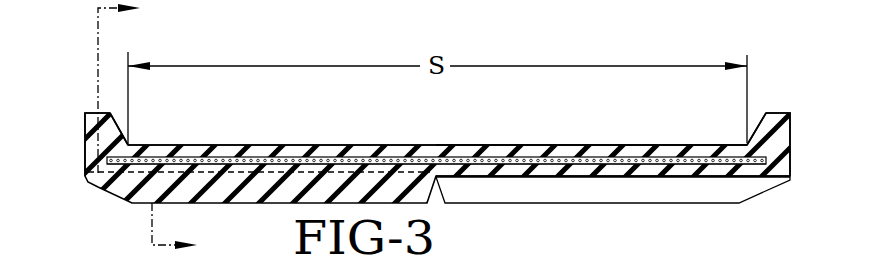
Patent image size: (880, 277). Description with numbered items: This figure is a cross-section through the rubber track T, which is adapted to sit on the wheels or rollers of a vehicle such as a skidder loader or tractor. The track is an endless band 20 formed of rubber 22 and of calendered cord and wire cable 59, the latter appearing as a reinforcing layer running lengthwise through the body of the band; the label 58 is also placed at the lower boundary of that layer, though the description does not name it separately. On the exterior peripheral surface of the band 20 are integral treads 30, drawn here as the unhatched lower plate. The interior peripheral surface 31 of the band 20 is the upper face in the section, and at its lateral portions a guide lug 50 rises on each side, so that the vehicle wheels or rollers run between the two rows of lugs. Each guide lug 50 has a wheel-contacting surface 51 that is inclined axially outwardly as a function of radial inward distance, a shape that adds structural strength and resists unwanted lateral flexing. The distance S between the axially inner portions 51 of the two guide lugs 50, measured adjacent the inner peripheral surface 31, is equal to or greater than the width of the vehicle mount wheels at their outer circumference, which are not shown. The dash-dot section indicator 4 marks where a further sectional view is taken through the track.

The section line 4- 4 is at (157, 132).
The endless band 20 is at (439, 152).
The rubber 22 is at (601, 145).
The treads 30 is at (603, 193).
The interior peripheral surface 31 is at (287, 145).
The guide lugs 50 is at (88, 115).
The wheel-contacting surface 51 is at (128, 143).
The lower layer 58 is at (666, 163).
The calendered cord and wire cable 59 is at (356, 157).